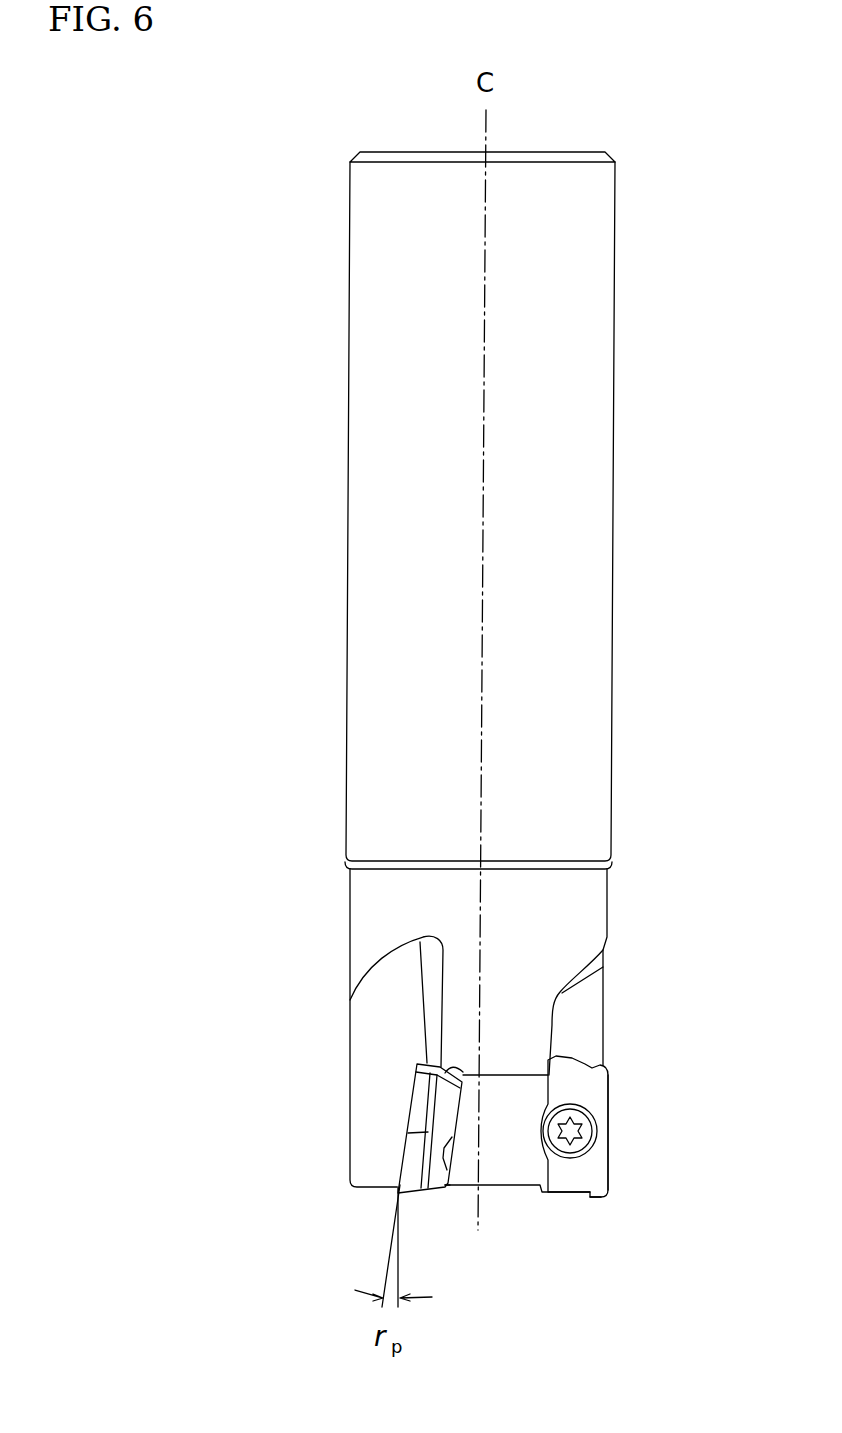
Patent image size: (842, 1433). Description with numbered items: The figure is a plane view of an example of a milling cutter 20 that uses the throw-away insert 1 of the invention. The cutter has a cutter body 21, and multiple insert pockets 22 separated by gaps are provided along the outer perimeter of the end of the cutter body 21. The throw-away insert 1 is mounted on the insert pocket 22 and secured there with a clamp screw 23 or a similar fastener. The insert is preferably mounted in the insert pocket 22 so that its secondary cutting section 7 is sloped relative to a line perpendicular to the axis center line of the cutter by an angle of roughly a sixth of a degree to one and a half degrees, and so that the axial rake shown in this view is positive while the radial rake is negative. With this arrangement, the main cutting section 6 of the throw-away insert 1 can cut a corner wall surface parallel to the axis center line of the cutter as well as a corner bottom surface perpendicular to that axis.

The milling cutter 20 is at (539, 672).
The cutter body 21 is at (592, 688).
The insert pocket 22 is at (605, 1062).
The clamp screw 23 is at (593, 1108).
The throw-away insert 1 is at (613, 1138).
The main cutting section 6 is at (609, 1166).
The secondary cutting section 7 is at (597, 1197).